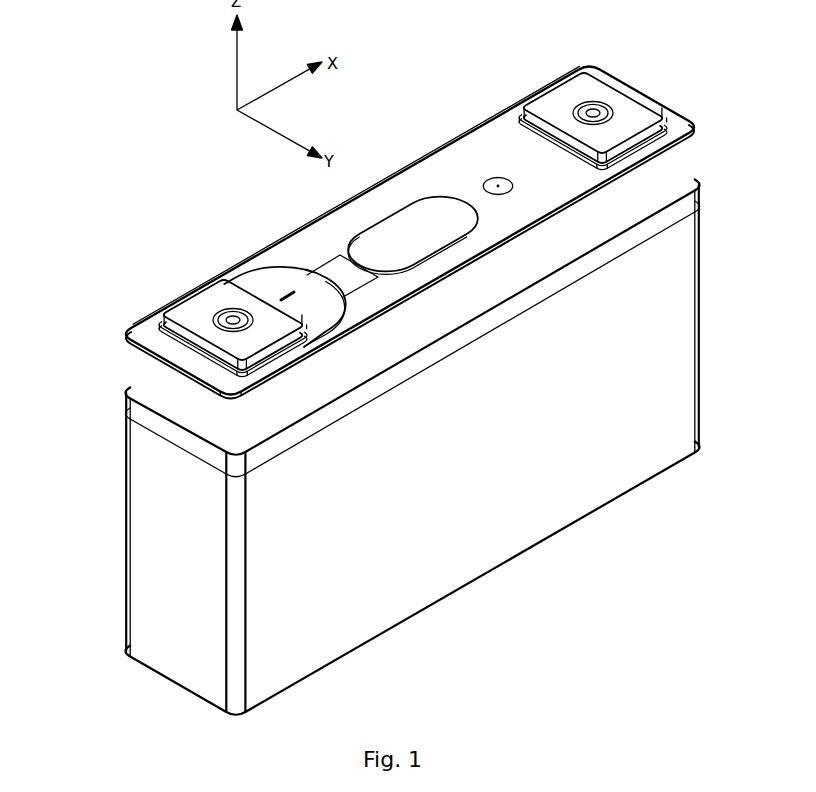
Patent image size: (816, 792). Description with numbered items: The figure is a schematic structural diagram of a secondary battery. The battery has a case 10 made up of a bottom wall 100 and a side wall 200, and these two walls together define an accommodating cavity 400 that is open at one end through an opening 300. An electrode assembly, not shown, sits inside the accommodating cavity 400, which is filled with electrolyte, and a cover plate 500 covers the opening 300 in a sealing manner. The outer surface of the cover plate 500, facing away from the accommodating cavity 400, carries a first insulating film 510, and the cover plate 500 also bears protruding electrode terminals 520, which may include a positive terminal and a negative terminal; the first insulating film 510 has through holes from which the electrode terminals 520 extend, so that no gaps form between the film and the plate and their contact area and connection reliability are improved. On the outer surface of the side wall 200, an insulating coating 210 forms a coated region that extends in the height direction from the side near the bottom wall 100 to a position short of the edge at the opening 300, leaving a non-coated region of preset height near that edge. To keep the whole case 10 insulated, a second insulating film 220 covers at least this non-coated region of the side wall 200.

The case 10 is at (718, 338).
The bottom wall 100 is at (475, 598).
The side wall 200 is at (60, 388).
The insulating coating 210 is at (138, 508).
The second insulating film 220 is at (140, 413).
The opening 300 is at (131, 361).
The accommodating cavity 400 is at (686, 180).
The cover plate 500 is at (658, 80).
The first insulating film 510 is at (318, 243).
The electrode terminal 520 is at (566, 88).